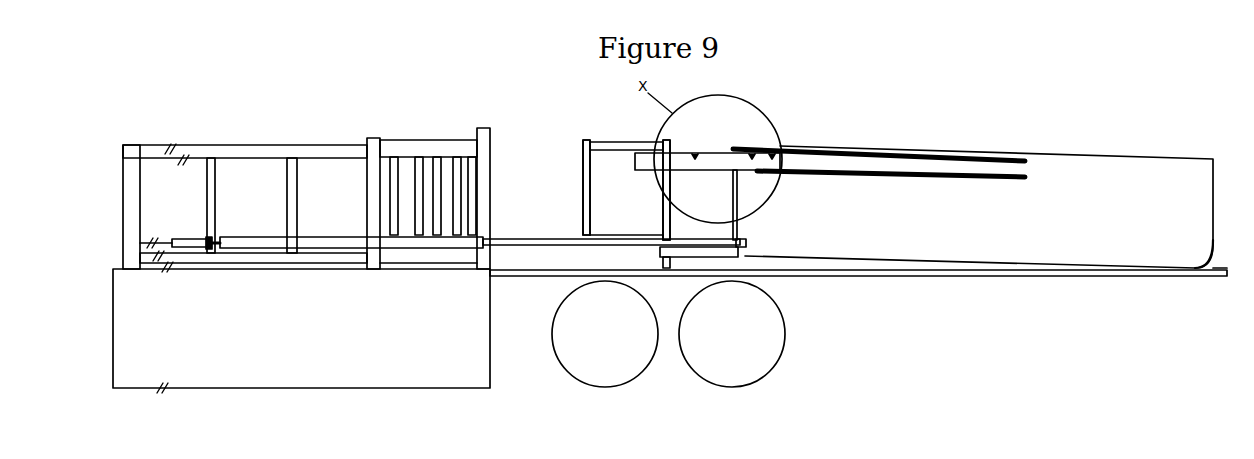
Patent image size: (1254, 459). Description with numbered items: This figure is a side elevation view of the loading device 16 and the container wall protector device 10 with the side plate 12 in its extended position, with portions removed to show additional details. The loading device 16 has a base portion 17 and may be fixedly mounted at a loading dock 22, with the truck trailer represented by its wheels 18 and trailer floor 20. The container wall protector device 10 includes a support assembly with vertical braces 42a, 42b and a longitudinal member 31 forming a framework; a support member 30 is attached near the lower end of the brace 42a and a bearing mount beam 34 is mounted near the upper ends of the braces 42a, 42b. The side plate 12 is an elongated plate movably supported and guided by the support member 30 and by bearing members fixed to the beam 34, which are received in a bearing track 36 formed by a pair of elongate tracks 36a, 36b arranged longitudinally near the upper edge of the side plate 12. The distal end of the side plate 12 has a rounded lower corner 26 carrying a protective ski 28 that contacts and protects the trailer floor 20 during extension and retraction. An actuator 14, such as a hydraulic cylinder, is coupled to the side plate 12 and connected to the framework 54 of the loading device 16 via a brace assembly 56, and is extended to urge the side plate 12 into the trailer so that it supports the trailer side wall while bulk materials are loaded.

The container wall protector device 10 is at (858, 233).
The side plate 12 is at (1056, 231).
The actuator 14 is at (300, 243).
The loading device 16 is at (441, 103).
The base portion 17 is at (245, 199).
The wheels 18 is at (645, 367).
The trailer floor 20 is at (975, 276).
The loading dock 22 is at (360, 351).
The rounded lower corner 26 is at (1195, 254).
The ski 28 is at (1212, 270).
The support member 30 is at (715, 252).
The longitudinal member 31 is at (600, 174).
The bearing mount beam 34 is at (713, 153).
The bearing track 36 is at (880, 168).
The track 36a is at (999, 157).
The track 36b is at (992, 180).
The vertical brace 42a is at (663, 215).
The vertical brace 42b is at (583, 191).
The framework 54 is at (264, 145).
The brace assembly 56 is at (193, 228).